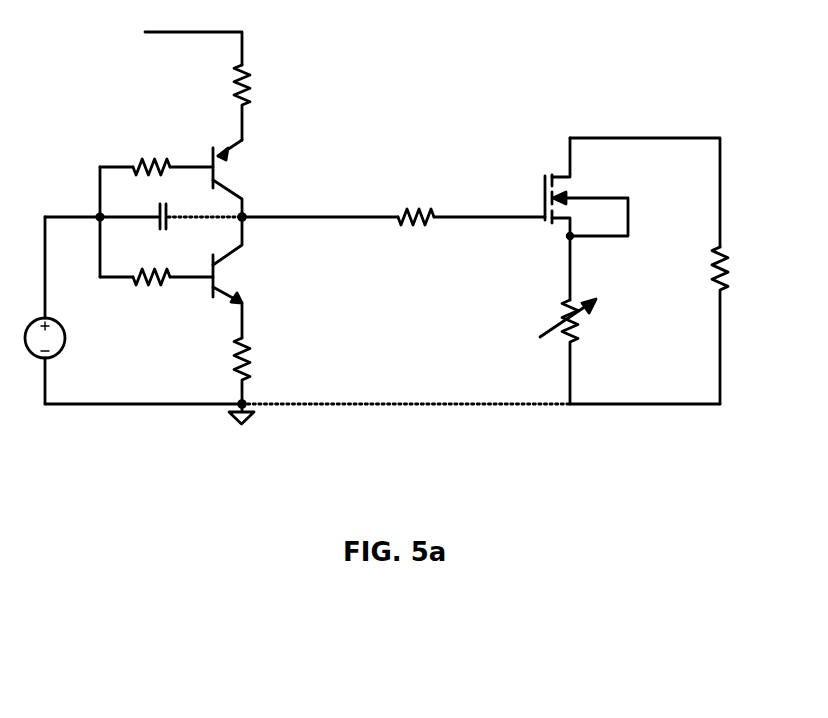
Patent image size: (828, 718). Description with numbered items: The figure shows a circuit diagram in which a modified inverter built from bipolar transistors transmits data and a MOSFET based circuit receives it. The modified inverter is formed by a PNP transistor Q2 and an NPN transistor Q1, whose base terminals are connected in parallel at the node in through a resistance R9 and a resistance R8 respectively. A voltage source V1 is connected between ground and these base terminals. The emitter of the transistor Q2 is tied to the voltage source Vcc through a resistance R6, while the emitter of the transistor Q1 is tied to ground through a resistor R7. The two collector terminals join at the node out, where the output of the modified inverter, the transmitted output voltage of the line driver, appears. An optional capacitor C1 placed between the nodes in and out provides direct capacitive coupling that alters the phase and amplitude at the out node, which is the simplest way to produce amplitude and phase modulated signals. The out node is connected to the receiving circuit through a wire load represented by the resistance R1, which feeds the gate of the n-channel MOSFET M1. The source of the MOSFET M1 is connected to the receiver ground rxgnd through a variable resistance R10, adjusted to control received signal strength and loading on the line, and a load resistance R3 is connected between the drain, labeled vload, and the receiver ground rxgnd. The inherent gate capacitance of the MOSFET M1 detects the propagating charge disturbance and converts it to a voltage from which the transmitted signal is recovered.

The voltage source Vcc is at (189, 35).
The resistance R6 is at (257, 102).
The PNP transistor Q2 is at (238, 178).
The resistance R8 is at (156, 157).
The node in is at (74, 222).
The optional capacitor C1 is at (171, 213).
The node out is at (318, 207).
The resistance R1 is at (471, 206).
The NPN transistor Q1 is at (237, 277).
The resistance R9 is at (156, 265).
The resistor R7 is at (257, 371).
The voltage source V1 is at (54, 310).
The receiver ground rxgnd is at (395, 417).
The NMOS MOSFET M1 is at (590, 219).
The load voltage node vload is at (656, 181).
The load resistance R3 is at (734, 325).
The variable resistance R10 is at (580, 351).